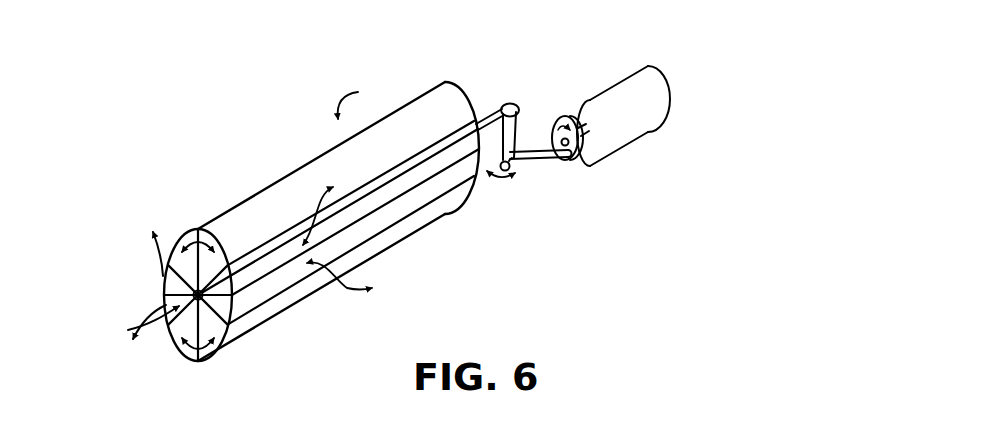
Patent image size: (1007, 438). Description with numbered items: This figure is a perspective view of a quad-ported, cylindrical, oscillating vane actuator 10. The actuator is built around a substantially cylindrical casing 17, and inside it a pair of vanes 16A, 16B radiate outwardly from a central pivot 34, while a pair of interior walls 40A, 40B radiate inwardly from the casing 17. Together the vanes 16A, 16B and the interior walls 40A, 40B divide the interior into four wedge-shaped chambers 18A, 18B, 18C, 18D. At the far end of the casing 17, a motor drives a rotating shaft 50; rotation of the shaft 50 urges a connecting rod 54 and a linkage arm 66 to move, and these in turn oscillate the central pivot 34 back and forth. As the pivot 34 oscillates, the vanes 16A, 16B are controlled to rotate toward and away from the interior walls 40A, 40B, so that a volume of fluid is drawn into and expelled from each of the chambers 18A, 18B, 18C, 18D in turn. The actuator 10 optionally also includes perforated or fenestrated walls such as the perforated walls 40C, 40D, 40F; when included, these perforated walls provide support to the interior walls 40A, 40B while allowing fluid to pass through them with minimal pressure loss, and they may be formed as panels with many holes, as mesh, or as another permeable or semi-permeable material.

The oscillating vane actuator 10 is at (514, 51).
The cylindrical casing 17 is at (360, 97).
The central pivot 34 is at (192, 301).
The vane 16A is at (196, 228).
The vane 16B is at (197, 362).
The wedge-shaped chamber 18A is at (400, 190).
The wedge-shaped chamber 18B is at (360, 232).
The wedge-shaped chamber 18C is at (140, 317).
The wedge-shaped chamber 18D is at (174, 287).
The interior wall 40A is at (163, 301).
The interior wall 40B is at (158, 316).
The perforated wall 40C is at (470, 136).
The perforated wall 40D is at (470, 189).
The perforated wall 40F is at (164, 290).
The rotating shaft 50 is at (577, 160).
The connecting rod 54 is at (532, 162).
The linkage arm 66 is at (520, 140).